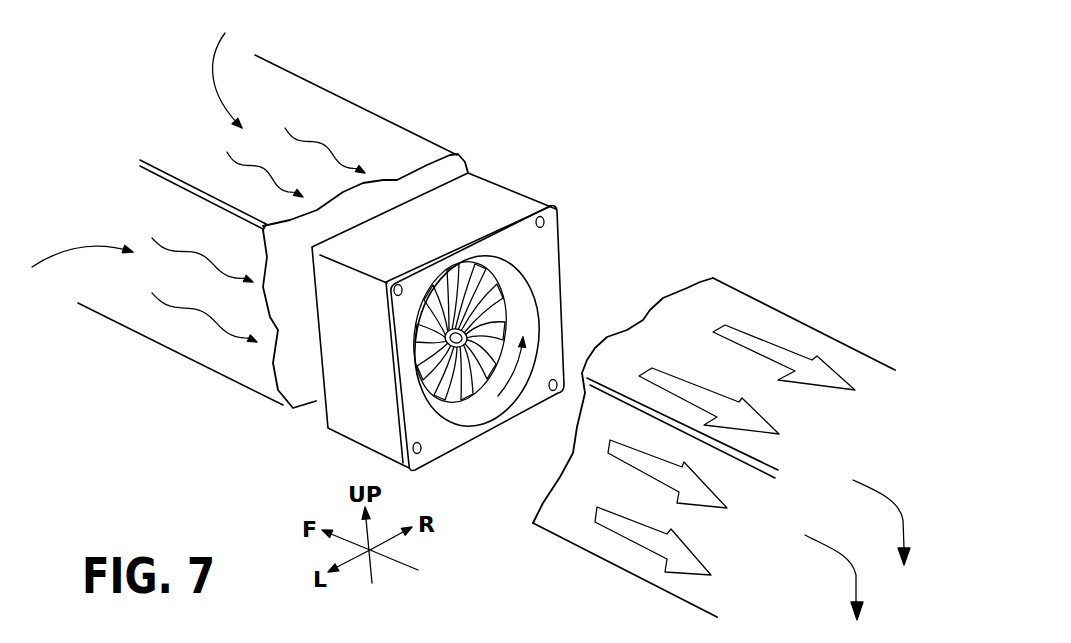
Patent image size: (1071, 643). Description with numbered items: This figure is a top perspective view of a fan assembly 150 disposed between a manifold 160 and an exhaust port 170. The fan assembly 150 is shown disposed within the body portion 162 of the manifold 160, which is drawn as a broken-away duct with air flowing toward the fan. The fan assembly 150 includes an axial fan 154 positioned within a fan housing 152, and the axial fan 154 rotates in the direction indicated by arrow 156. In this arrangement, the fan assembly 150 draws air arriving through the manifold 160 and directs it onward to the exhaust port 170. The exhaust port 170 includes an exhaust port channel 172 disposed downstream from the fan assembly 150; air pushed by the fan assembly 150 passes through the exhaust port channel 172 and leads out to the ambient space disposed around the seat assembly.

The fan assembly 150 is at (522, 177).
The fan housing 152 is at (507, 217).
The axial fan 154 is at (510, 317).
The arrow 156 is at (498, 400).
The manifold 160 is at (378, 152).
The body portion 162 is at (318, 172).
The exhaust port 170 is at (786, 313).
The exhaust port channel 172 is at (832, 418).